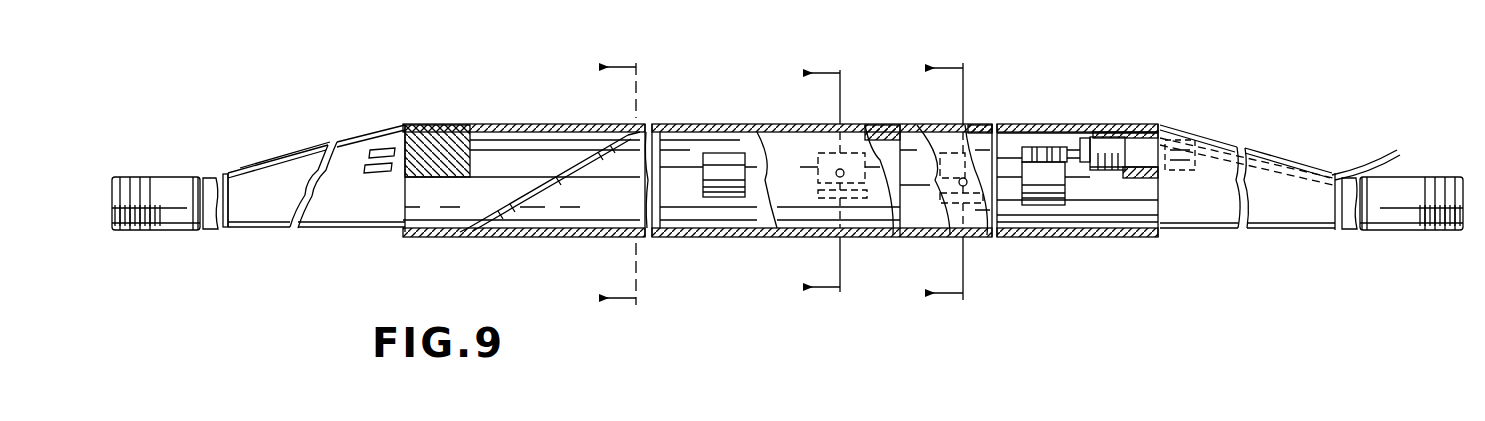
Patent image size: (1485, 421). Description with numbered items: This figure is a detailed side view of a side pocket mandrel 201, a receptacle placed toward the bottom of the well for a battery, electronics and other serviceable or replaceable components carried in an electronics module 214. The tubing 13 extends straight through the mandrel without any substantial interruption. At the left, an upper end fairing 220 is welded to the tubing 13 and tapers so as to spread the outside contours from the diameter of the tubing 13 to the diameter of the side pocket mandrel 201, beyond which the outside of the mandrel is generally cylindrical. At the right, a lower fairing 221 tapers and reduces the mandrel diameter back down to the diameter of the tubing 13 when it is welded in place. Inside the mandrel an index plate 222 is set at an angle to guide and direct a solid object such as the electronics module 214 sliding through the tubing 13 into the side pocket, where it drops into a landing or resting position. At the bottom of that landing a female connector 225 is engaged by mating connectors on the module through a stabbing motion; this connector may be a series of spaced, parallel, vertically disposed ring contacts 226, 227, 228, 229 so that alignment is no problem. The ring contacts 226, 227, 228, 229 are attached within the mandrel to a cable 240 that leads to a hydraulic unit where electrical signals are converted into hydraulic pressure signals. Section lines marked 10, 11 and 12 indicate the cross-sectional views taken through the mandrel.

The tubing 13 is at (168, 175).
The upper end fairing 220 is at (353, 135).
The index plate 222 is at (562, 167).
The side pocket mandrel 201 is at (683, 123).
The electronics module 214 is at (907, 148).
The ring contact 226 is at (1028, 140).
The ring contact 227 is at (1037, 143).
The ring contact 228 is at (1052, 143).
The ring contact 229 is at (1062, 145).
The female connector 225 is at (1070, 145).
The lower fairing 221 is at (1220, 142).
The cable 240 is at (1360, 167).
The section line 10- 10 is at (930, 184).
The section line 11- 11 is at (811, 182).
The section line 12- 12 is at (602, 185).